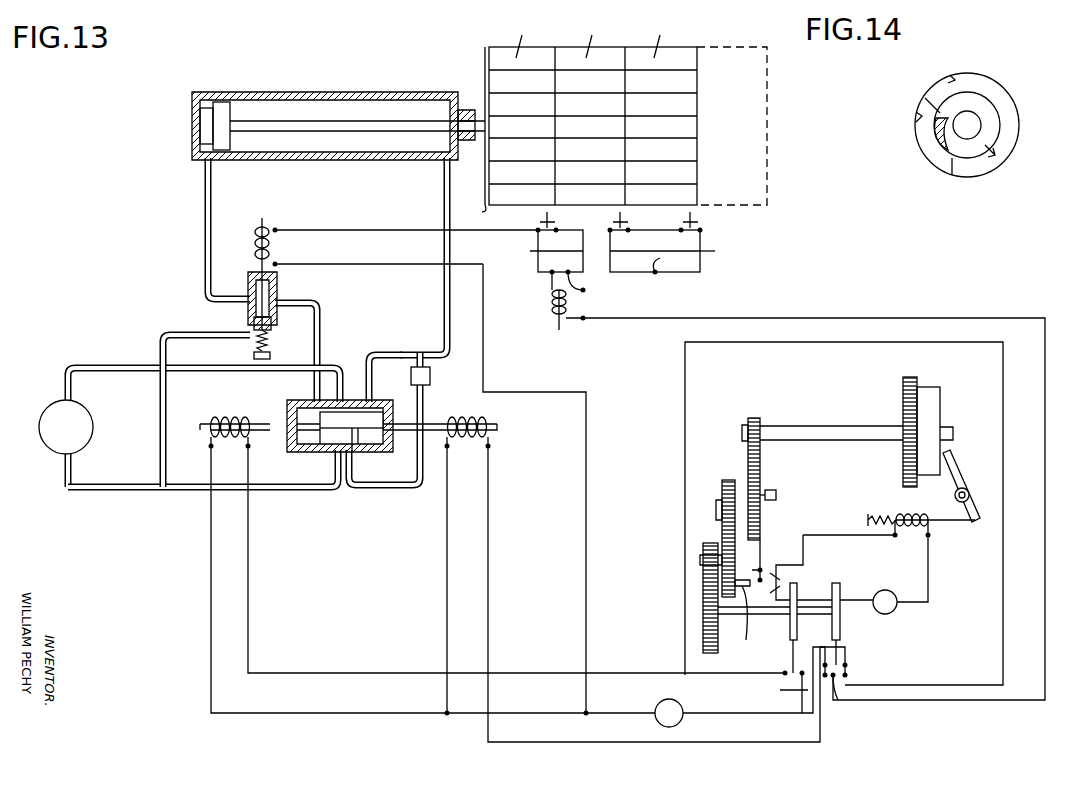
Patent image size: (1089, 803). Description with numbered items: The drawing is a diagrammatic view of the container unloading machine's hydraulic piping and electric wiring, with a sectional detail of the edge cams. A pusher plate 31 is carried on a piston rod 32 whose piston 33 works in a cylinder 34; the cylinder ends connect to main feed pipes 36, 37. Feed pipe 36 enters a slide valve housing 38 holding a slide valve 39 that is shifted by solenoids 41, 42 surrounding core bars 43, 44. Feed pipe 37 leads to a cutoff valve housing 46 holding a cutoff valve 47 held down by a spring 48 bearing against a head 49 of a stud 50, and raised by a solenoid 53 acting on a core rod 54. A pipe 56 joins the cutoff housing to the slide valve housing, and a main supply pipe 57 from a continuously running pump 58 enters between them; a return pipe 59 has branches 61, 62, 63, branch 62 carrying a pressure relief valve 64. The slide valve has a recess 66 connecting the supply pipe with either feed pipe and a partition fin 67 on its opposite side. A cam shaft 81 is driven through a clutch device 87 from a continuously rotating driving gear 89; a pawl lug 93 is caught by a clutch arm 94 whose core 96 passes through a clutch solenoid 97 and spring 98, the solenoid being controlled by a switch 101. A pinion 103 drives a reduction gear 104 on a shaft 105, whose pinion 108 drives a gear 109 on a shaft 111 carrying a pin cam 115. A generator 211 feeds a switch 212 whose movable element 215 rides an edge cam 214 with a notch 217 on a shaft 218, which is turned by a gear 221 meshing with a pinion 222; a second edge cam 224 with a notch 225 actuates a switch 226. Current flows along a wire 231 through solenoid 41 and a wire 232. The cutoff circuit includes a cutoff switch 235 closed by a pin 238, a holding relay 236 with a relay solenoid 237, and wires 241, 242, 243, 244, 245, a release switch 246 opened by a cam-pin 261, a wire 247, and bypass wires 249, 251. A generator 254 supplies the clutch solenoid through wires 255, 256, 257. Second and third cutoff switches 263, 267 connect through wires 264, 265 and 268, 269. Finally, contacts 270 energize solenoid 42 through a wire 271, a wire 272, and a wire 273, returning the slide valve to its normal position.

In FIG. 13, the pusher plate 31 is at (483, 57).
In FIG. 13, the piston rod 32 is at (338, 125).
In FIG. 13, the piston 33 is at (222, 98).
In FIG. 13, the cylinder 34 is at (298, 96).
In FIG. 13, the main feed pipe 36 is at (443, 184).
In FIG. 13, the main feed pipe 37 is at (205, 194).
In FIG. 13, the slide valve housing 38 is at (292, 452).
In FIG. 13, the slide valve 39 is at (370, 452).
In FIG. 13, the electric solenoid 41 is at (228, 417).
In FIG. 13, the electric solenoid 42 is at (468, 418).
In FIG. 13, the core bar 43 is at (202, 430).
In FIG. 13, the core bar 44 is at (497, 428).
In FIG. 13, the cutoff valve housing 46 is at (250, 282).
In FIG. 13, the cutoff valve 47 is at (254, 322).
In FIG. 13, the spring 48 is at (270, 337).
In FIG. 13, the head 49 is at (254, 355).
In FIG. 13, the stud 50 is at (268, 350).
In FIG. 13, the electric solenoid 53 is at (255, 246).
In FIG. 13, the core rod 54 is at (265, 228).
In FIG. 13, the pipe 56 is at (318, 310).
In FIG. 13, the main supply pipe 57 is at (330, 368).
In FIG. 13, the feed pump 58 is at (46, 402).
In FIG. 13, the return supply pipe 59 is at (115, 490).
In FIG. 13, the branch return pipe 61 is at (161, 409).
In FIG. 13, the branch return pipe 62 is at (422, 404).
In FIG. 13, the branch return pipe 63 is at (338, 462).
In FIG. 13, the pressure relief valve 64 is at (424, 376).
In FIG. 13, the channel or recess 66 is at (344, 392).
In FIG. 13, the partition fin 67 is at (355, 452).
In FIG. 13, the cam shaft 81 is at (950, 428).
In FIG. 13, the clutch device 87 is at (938, 386).
In FIG. 13, the driving gear 89 is at (910, 377).
In FIG. 13, the lug 93 is at (953, 494).
In FIG. 13, the clutch arm 94 is at (965, 475).
In FIG. 13, the movable core 96 is at (955, 522).
In FIG. 13, the electric solenoid 97 is at (915, 514).
In FIG. 13, the spring 98 is at (878, 514).
In FIG. 13, the electric switch 101 is at (780, 575).
In FIG. 13, the pinion 103 is at (754, 418).
In FIG. 13, the rotation reduction gear 104 is at (748, 450).
In FIG. 13, the shaft 105 is at (768, 490).
In FIG. 13, the pinion 108 is at (735, 480).
In FIG. 13, the rotation reduction gear 109 is at (722, 528).
In FIG. 13, the shaft 111 is at (700, 560).
In FIG. 13, the pin cam 115 is at (745, 586).
In FIG. 13, the generator 211 is at (657, 703).
In FIG. 13, the electric switch 212 is at (786, 692).
In FIG. 13, the edge cam 214 is at (790, 628).
In FIG. 14, the edge cam 214 is at (938, 153).
In FIG. 13, the movable element 215 is at (793, 655).
In FIG. 14, the notch 217 is at (918, 122).
In FIG. 13, the shaft 218 is at (842, 612).
In FIG. 14, the shaft 218 is at (970, 125).
In FIG. 13, the gear 221 is at (703, 633).
In FIG. 13, the pinion 222 is at (722, 548).
In FIG. 13, the second edge cam 224 is at (797, 595).
In FIG. 14, the second edge cam 224 is at (993, 92).
In FIG. 14, the peripheral notch 225 is at (952, 77).
In FIG. 13, the electric switch 226 is at (838, 700).
In FIG. 13, the wire 231 is at (337, 713).
In FIG. 13, the connecting wire 232 is at (250, 580).
In FIG. 13, the cutoff switch 235 is at (563, 217).
In FIG. 13, the holding relay 236 is at (552, 280).
In FIG. 13, the relay solenoid 237 is at (552, 314).
In FIG. 13, the pin 238 is at (468, 212).
In FIG. 13, the connecting wire 241 is at (586, 574).
In FIG. 13, the connecting wire 242 is at (348, 230).
In FIG. 13, the connecting wire 243 is at (556, 251).
In FIG. 13, the connecting wire 244 is at (800, 312).
In FIG. 13, the connecting wire 245 is at (685, 390).
In FIG. 13, the release switch 246 is at (765, 565).
In FIG. 13, the wire 247 is at (760, 664).
In FIG. 13, the wire 249 is at (406, 248).
In FIG. 13, the wire 251 is at (583, 290).
In FIG. 13, the generator 254 is at (897, 604).
In FIG. 13, the wire 255 is at (930, 580).
In FIG. 13, the wire 256 is at (833, 535).
In FIG. 13, the wire 257 is at (860, 606).
In FIG. 13, the cam-pin 261 is at (753, 613).
In FIG. 13, the second cutoff switch 263 is at (637, 217).
In FIG. 13, the wire 264 is at (610, 248).
In FIG. 13, the wire 265 is at (655, 272).
In FIG. 13, the third cutoff switch 267 is at (694, 222).
In FIG. 13, the wire 268 is at (673, 262).
In FIG. 13, the wire 269 is at (726, 244).
In FIG. 13, the contacts 270 is at (828, 667).
In FIG. 13, the wire 271 is at (447, 558).
In FIG. 13, the connecting wire 272 is at (488, 530).
In FIG. 13, the wire 273 is at (832, 655).